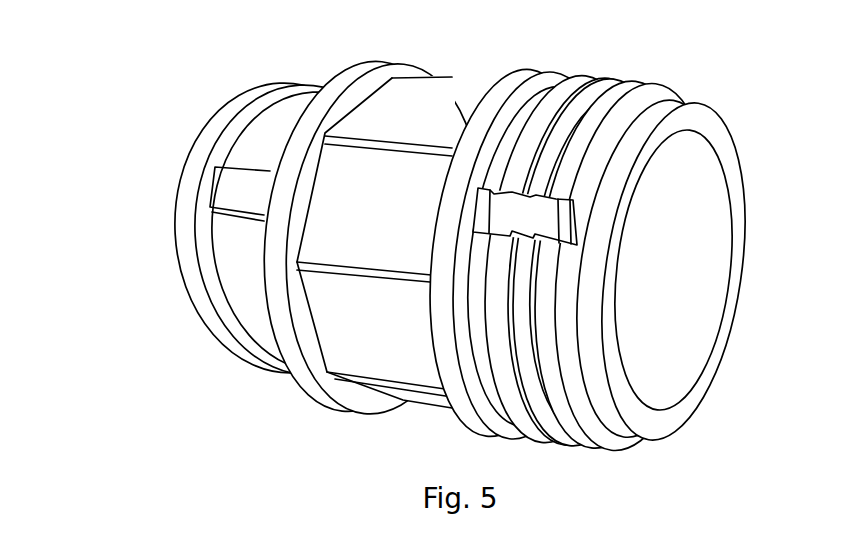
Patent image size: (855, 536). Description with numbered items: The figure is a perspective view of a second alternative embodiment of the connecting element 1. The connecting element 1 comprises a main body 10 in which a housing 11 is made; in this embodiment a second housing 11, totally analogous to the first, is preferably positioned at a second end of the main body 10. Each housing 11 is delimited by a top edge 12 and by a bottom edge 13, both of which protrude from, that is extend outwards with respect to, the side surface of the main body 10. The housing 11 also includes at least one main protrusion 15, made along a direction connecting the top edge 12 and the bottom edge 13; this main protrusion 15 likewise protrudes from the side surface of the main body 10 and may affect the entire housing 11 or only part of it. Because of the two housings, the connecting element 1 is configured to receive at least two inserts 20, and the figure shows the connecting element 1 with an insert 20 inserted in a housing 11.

The connecting element 1 is at (124, 185).
The main body 10 is at (437, 100).
The housing 11 is at (290, 108).
The top edge 12 is at (683, 120).
The bottom edge 13 is at (550, 80).
The main protrusion 15 is at (223, 197).
The insert 20 is at (633, 80).